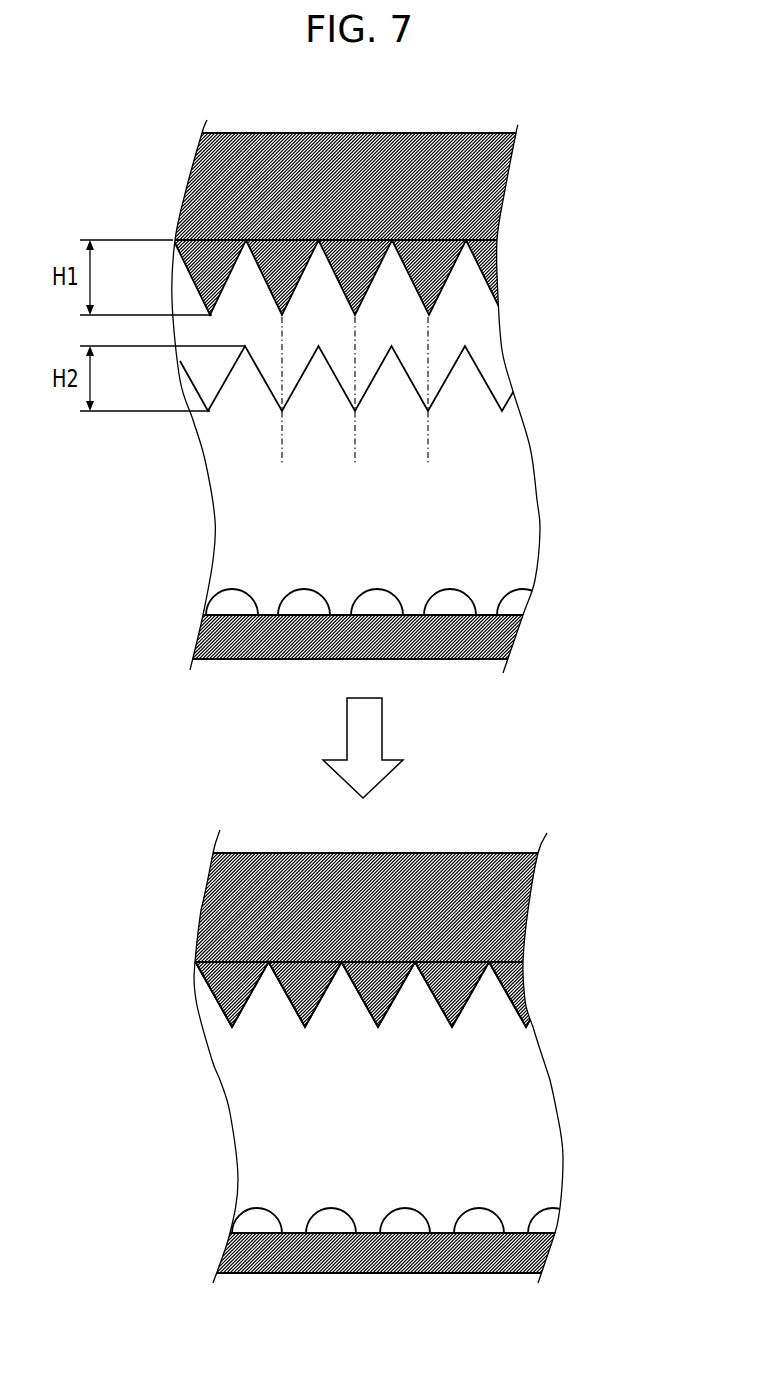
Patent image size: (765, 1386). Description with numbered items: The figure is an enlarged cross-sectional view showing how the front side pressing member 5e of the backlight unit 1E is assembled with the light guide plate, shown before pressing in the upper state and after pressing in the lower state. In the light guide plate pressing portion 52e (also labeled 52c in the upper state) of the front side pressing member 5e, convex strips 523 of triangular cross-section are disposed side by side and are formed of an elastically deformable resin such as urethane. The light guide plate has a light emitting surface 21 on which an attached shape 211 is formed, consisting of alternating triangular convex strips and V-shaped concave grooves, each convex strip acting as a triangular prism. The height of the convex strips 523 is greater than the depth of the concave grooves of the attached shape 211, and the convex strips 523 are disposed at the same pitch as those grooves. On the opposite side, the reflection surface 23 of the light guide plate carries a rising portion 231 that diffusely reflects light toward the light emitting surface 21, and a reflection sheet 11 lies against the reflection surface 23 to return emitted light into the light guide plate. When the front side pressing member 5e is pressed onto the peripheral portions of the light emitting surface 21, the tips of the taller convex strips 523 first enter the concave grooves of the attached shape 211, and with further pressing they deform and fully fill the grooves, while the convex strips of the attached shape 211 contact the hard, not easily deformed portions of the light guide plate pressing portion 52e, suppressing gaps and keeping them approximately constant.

The backlight unit 1E is at (281, 124).
The front side pressing member 5e is at (407, 152).
The base portion of prism sheet 52c is at (472, 222).
The light guide plate pressing portion 52e is at (502, 926).
The convex strips 523 is at (445, 278).
The light emitting surface 21 is at (487, 344).
The attached shape 211 is at (440, 398).
The reflection surface 23 is at (278, 624).
The rising portion 231 is at (303, 590).
The reflection sheet 11 is at (437, 657).